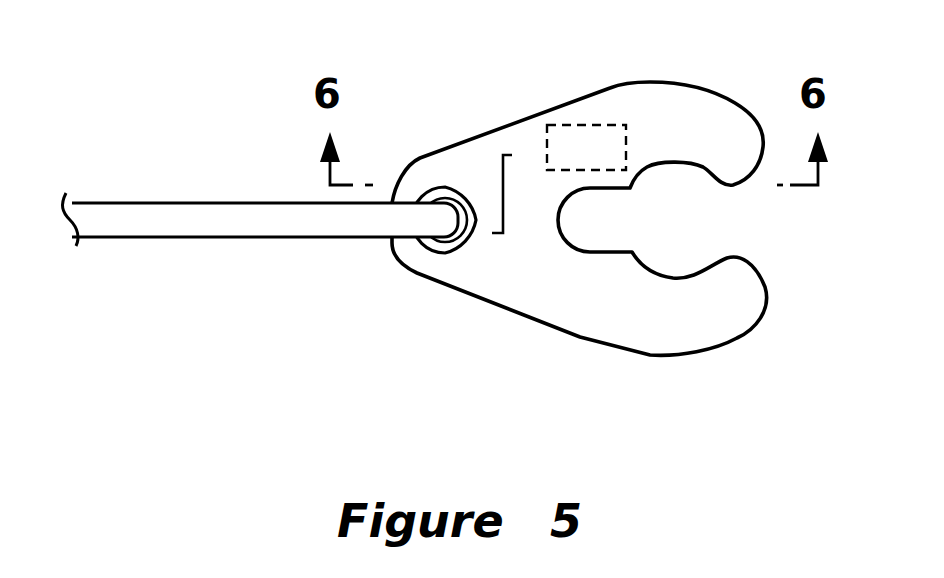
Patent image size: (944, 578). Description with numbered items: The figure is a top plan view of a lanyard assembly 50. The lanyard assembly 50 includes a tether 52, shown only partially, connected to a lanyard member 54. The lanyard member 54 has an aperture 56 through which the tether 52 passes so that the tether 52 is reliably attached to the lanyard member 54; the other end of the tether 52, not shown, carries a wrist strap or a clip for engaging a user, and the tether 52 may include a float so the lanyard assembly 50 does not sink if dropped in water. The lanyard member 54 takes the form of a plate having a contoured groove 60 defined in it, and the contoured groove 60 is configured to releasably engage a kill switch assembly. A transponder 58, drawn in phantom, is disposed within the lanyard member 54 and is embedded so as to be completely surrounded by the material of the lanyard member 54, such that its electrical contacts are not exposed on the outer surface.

The lanyard assembly 50 is at (298, 276).
The tether 52 is at (230, 203).
The lanyard member 54 is at (610, 322).
The aperture 56 is at (462, 252).
The transponder 58 is at (595, 125).
The contoured groove 60 is at (680, 233).